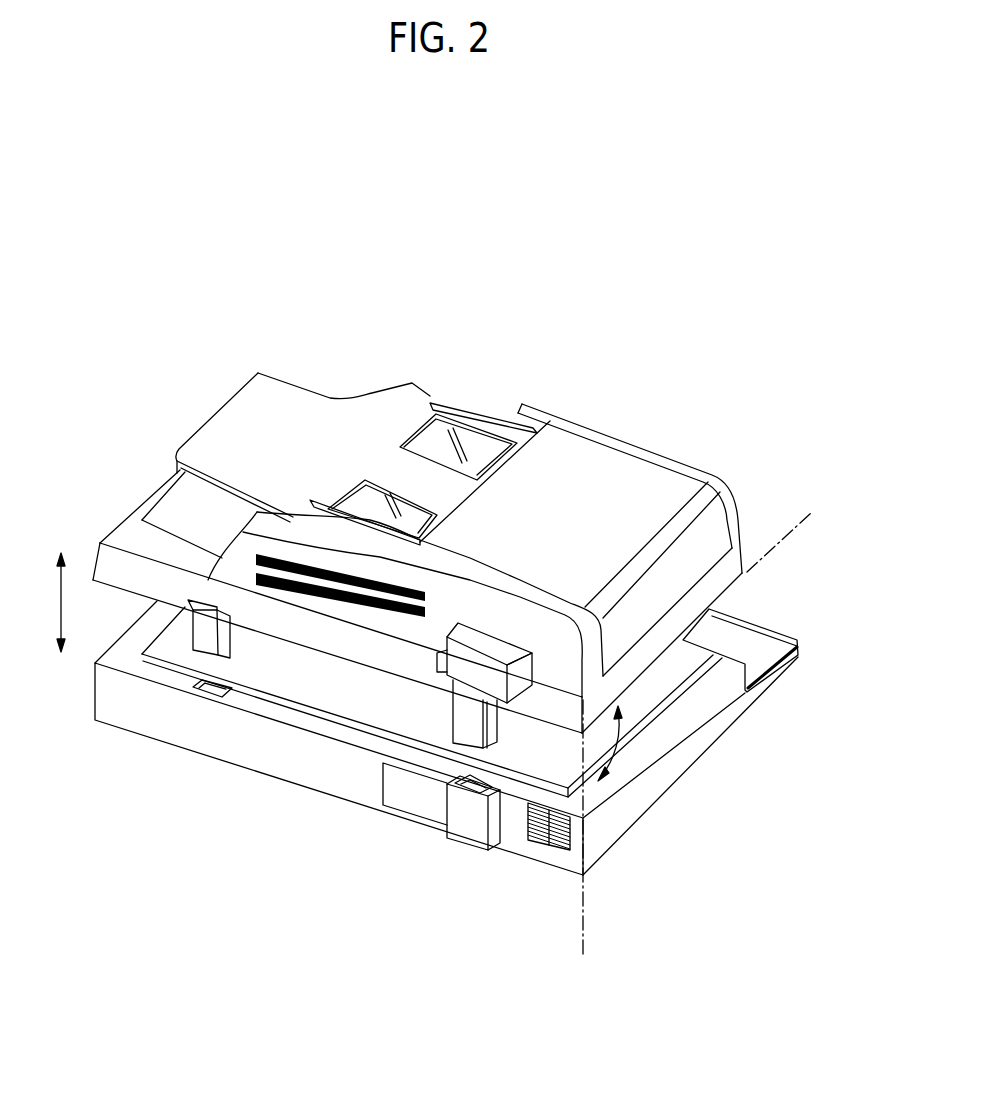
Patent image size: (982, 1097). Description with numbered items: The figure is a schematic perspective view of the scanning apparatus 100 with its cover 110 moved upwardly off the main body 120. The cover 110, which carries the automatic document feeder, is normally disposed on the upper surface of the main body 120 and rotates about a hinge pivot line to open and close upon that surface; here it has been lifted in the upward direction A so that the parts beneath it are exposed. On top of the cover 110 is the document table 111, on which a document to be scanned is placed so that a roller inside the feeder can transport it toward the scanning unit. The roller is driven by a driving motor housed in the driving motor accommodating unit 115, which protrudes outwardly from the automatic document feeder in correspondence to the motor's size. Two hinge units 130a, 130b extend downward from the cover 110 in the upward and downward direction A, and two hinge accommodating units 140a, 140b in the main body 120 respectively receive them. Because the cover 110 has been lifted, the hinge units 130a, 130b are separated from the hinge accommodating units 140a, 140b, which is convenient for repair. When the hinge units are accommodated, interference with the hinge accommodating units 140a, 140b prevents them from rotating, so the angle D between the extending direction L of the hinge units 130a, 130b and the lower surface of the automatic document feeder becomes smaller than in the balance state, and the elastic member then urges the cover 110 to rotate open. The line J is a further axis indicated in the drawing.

The scanning apparatus 100 is at (608, 308).
The cover 110 is at (632, 460).
The document table 111 is at (369, 442).
The driving motor accommodating unit 115 is at (495, 675).
The main body 120 is at (700, 750).
The hinge unit 130a is at (202, 645).
The hinge unit 130b is at (460, 735).
The hinge accommodating unit 140a is at (213, 697).
The hinge accommodating unit 140b is at (468, 842).
The upward and downward direction A is at (50, 602).
The angle D is at (613, 753).
The axis J is at (803, 518).
The extending direction L is at (585, 923).